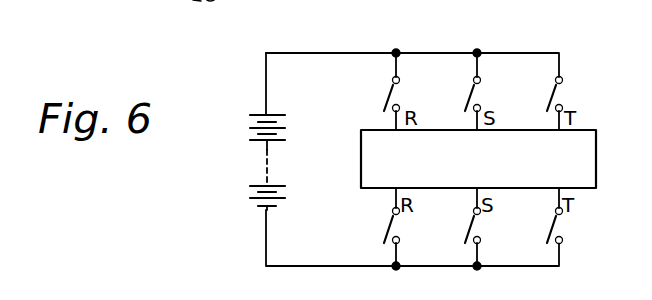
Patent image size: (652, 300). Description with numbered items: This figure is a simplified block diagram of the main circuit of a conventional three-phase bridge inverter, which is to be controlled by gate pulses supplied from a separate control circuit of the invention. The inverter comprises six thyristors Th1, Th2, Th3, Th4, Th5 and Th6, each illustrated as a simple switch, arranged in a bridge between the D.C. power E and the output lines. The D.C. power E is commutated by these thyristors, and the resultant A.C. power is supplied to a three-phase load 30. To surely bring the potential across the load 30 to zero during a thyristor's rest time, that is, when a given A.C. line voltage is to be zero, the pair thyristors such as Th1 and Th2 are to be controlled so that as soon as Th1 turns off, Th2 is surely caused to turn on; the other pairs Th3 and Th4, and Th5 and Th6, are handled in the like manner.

The D.C. power E is at (250, 133).
The three-phase load 30 is at (597, 141).
The thyristor Th1 is at (384, 91).
The thyristor Th2 is at (386, 228).
The thyristor Th3 is at (468, 92).
The thyristor Th4 is at (469, 229).
The thyristor Th5 is at (547, 94).
The thyristor Th6 is at (551, 231).